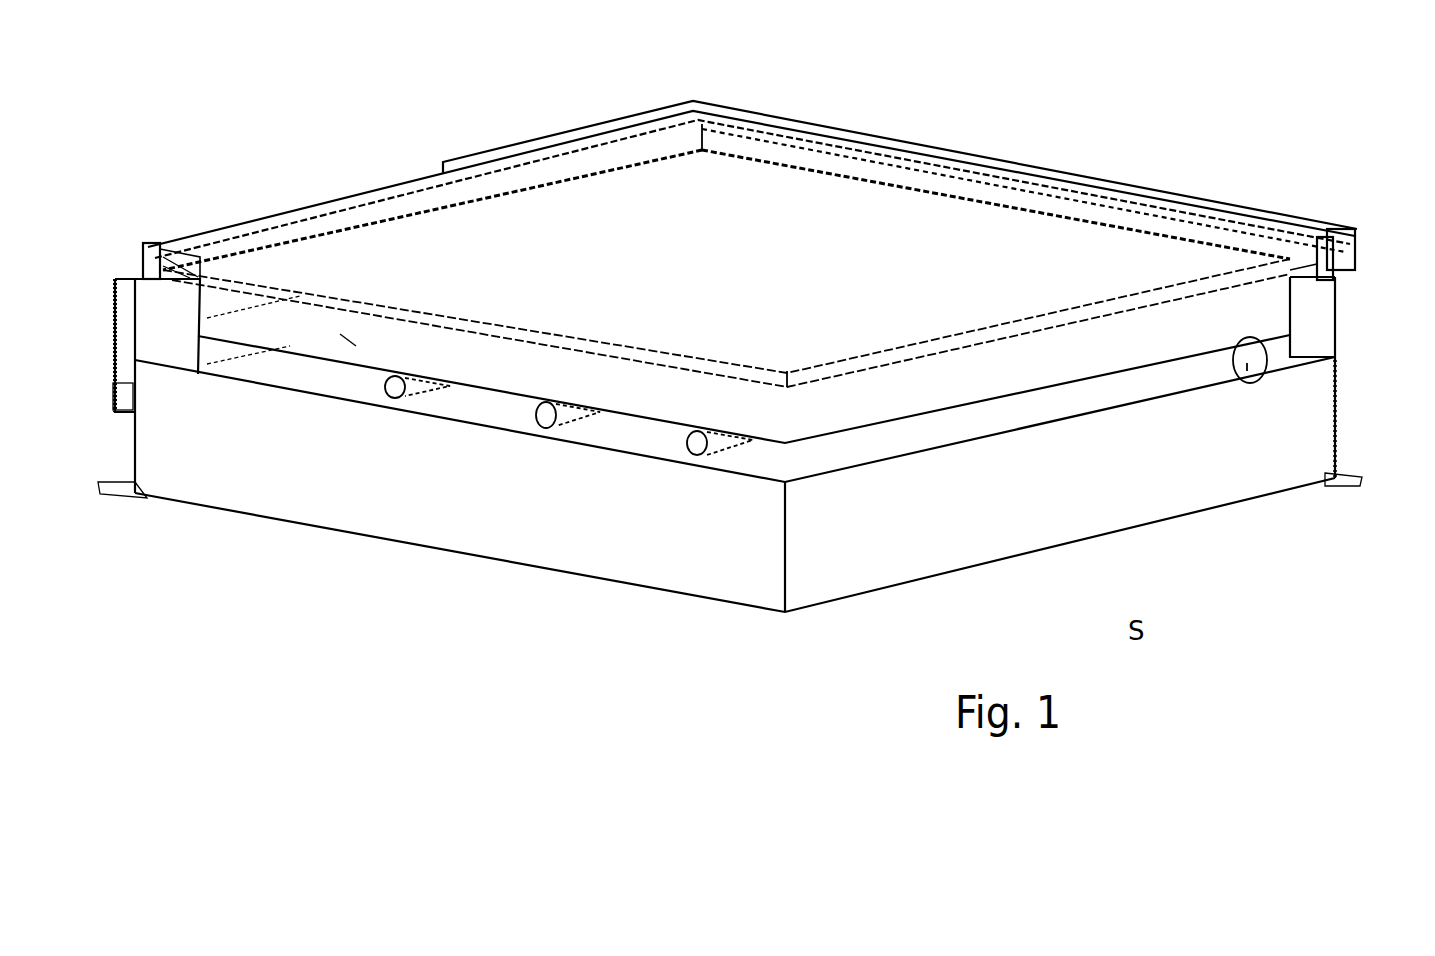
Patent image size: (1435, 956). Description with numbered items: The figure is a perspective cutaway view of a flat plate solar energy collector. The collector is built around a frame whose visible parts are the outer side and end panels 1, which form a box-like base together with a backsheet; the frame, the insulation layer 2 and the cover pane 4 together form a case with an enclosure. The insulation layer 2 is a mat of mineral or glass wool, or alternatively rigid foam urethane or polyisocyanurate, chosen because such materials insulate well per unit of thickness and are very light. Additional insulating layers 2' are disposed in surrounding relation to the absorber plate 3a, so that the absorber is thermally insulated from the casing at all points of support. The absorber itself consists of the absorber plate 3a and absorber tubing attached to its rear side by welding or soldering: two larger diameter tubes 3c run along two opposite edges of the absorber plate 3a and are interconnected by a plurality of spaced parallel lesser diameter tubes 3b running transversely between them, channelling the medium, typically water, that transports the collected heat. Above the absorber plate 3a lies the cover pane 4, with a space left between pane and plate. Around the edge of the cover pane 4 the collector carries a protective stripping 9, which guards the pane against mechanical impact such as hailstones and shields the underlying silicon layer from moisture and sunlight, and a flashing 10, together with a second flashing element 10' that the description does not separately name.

The outer side- and end panels 1 is at (1336, 405).
The insulation layer 2 is at (744, 454).
The additional insulating layers 2' is at (774, 344).
The absorber plate 3a is at (348, 340).
The lesser diameter tubes 3b is at (660, 457).
The larger diameter tubes 3c is at (1245, 368).
The cover pane 4 is at (860, 225).
The protective stripping 9 is at (547, 147).
The flashing 10 is at (166, 189).
The clamping profile 10' is at (1023, 161).